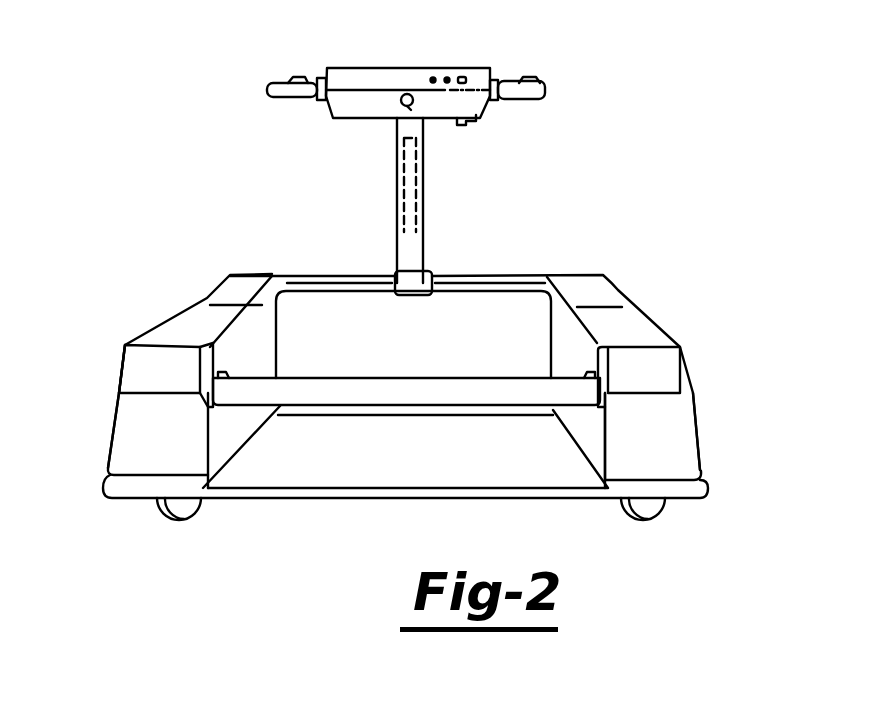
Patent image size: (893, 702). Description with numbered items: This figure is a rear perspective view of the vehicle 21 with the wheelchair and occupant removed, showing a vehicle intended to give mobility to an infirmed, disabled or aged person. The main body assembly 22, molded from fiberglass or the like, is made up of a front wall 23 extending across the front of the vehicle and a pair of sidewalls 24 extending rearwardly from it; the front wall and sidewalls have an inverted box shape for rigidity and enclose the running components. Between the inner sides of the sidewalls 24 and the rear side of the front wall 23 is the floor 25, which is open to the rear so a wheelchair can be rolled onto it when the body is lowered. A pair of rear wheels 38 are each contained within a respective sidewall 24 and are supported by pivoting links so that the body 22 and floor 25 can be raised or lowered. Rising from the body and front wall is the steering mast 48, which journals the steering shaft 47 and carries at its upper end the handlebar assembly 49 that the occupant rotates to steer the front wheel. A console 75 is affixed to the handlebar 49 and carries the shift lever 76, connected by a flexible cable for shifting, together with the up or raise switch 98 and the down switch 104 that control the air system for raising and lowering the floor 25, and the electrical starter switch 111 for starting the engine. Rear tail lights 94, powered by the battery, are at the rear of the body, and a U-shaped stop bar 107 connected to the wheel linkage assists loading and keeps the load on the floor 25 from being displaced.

The vehicle 21 is at (572, 245).
The main body assembly 22 is at (618, 287).
The front wall 23 is at (487, 278).
The sidewalls 24 is at (115, 420).
The floor 25 is at (405, 447).
The rear wheels 38 is at (160, 513).
The steering shaft 47 is at (404, 220).
The steering mast 48 is at (397, 184).
The handlebar assembly 49 is at (545, 92).
The console 75 is at (370, 68).
The shift lever 76 is at (456, 122).
The rear tail lights 94 is at (133, 358).
The up or raise switch 98 is at (447, 77).
The down switch 104 is at (434, 77).
The U-shaped stop bar 107 is at (413, 392).
The electrical starter switch 111 is at (464, 77).